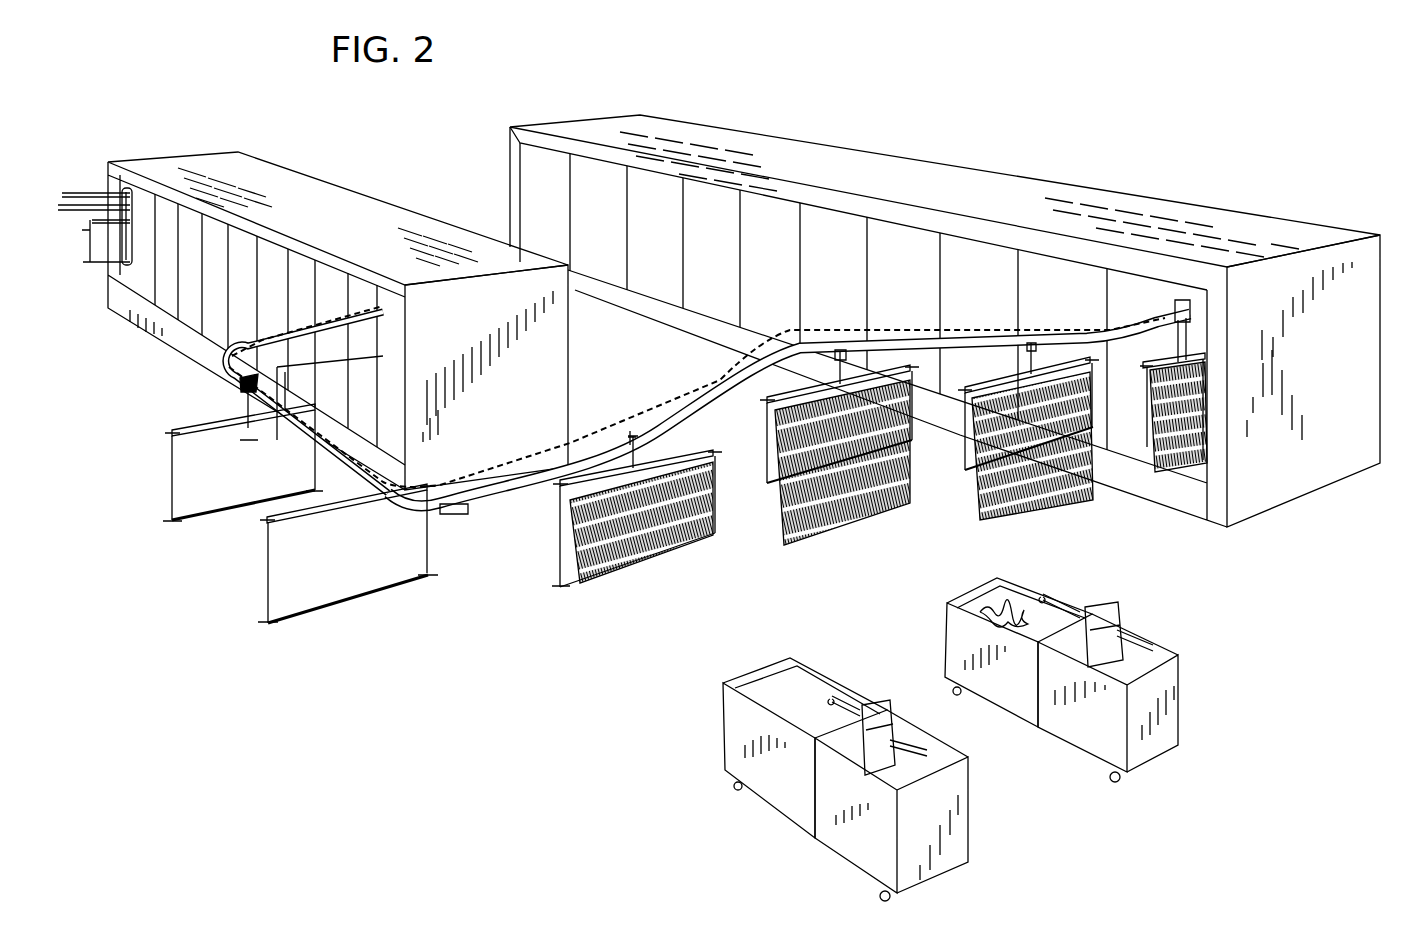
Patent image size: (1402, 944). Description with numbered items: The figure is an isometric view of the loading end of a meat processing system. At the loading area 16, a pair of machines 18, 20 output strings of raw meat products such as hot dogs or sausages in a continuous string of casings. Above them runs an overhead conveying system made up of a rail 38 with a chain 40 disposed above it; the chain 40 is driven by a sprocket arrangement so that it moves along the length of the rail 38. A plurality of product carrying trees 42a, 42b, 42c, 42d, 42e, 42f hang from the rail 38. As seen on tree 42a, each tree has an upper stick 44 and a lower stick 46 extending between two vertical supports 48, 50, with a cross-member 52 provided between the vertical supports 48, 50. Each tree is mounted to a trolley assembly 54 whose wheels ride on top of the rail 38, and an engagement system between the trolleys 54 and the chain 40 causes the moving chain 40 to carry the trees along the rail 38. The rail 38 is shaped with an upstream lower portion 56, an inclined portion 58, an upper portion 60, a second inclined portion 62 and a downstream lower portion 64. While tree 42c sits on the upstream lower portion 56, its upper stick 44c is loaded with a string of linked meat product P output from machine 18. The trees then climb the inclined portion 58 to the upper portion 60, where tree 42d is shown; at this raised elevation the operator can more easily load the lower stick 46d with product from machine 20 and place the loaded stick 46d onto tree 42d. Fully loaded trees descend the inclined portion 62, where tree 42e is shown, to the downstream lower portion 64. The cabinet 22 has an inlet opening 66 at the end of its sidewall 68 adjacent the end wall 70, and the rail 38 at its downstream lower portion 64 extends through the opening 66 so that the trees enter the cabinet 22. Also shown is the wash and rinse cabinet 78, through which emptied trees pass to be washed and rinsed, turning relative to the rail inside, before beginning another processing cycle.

The loading area 16 is at (931, 739).
The machine 18 is at (748, 813).
The machine 20 is at (1050, 755).
The cabinet 22 is at (945, 321).
The rail 38 is at (682, 405).
The chain 40 is at (718, 365).
The product carrying tree 42a is at (233, 483).
The product carrying tree 42b is at (313, 630).
The product carrying tree 42c is at (856, 517).
The product carrying tree 42d is at (797, 439).
The product carrying tree 42e is at (1009, 421).
The product carrying tree 42f is at (1191, 414).
The upper stick 44 is at (203, 467).
The upper stick 44c is at (560, 512).
The lower stick 46 is at (168, 518).
The lower stick 46d is at (770, 480).
The vertical support 48 is at (177, 470).
The vertical support 50 is at (312, 468).
The cross-member 52 is at (190, 430).
The trolley assembly 54 is at (236, 385).
The upstream lower portion 56 is at (468, 514).
The inclined portion 58 is at (683, 420).
The upper portion 60 is at (857, 343).
The inclined portion 62 is at (962, 335).
The downstream lower portion 64 is at (1122, 335).
The inlet opening 66 is at (1210, 345).
The sidewall 68 is at (784, 275).
The end wall 70 is at (1332, 380).
The wash and rinse cabinet 78 is at (313, 170).
The string of linked meat product P is at (560, 545).